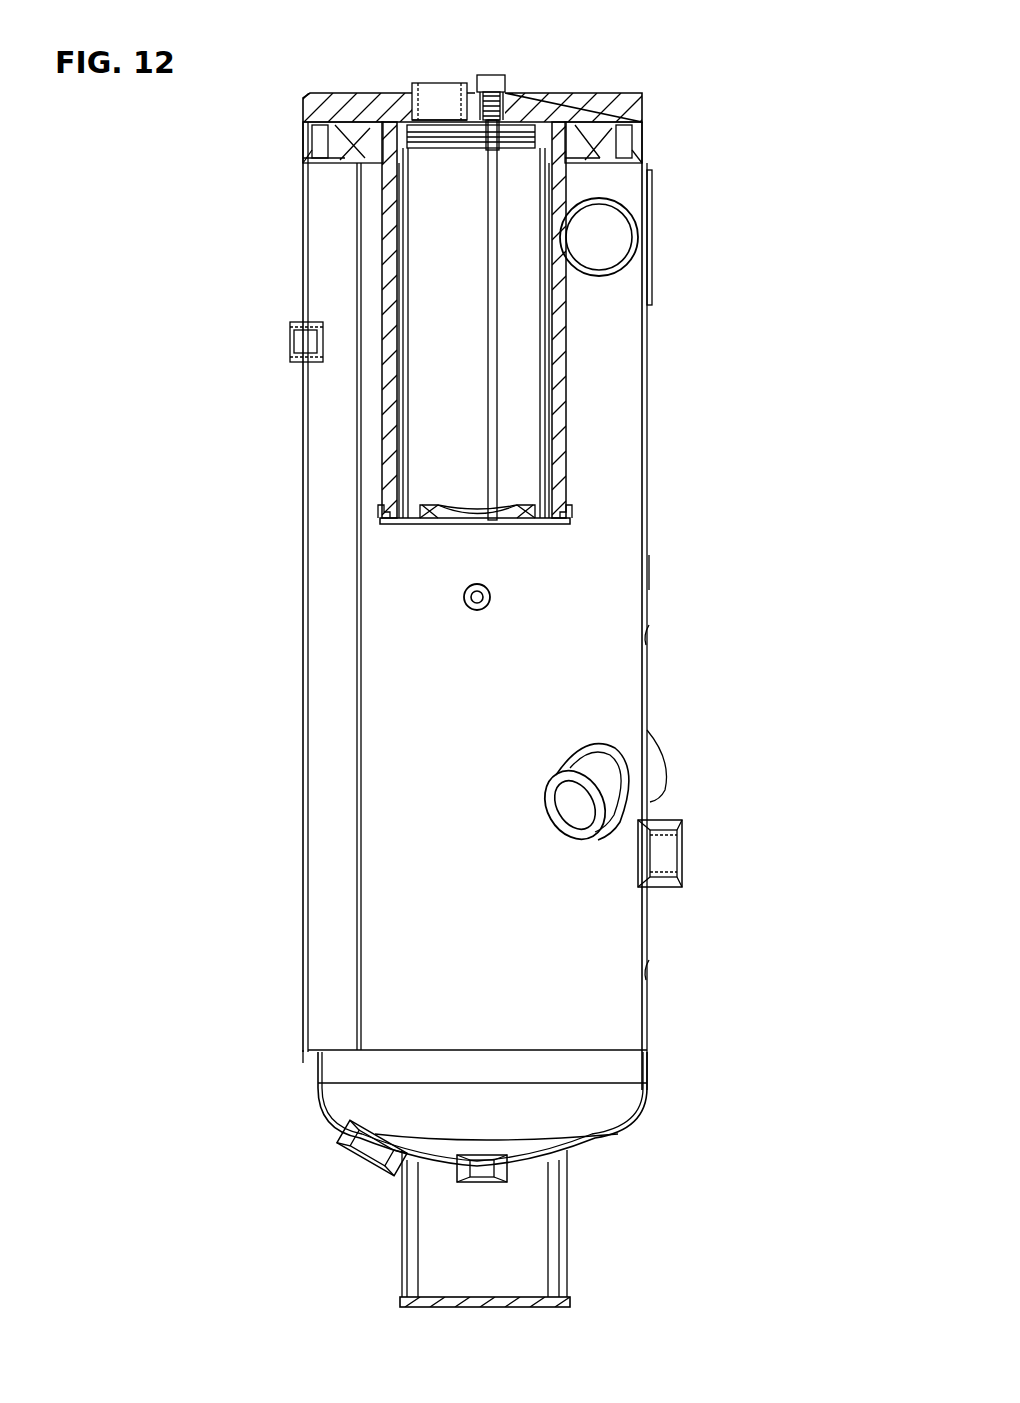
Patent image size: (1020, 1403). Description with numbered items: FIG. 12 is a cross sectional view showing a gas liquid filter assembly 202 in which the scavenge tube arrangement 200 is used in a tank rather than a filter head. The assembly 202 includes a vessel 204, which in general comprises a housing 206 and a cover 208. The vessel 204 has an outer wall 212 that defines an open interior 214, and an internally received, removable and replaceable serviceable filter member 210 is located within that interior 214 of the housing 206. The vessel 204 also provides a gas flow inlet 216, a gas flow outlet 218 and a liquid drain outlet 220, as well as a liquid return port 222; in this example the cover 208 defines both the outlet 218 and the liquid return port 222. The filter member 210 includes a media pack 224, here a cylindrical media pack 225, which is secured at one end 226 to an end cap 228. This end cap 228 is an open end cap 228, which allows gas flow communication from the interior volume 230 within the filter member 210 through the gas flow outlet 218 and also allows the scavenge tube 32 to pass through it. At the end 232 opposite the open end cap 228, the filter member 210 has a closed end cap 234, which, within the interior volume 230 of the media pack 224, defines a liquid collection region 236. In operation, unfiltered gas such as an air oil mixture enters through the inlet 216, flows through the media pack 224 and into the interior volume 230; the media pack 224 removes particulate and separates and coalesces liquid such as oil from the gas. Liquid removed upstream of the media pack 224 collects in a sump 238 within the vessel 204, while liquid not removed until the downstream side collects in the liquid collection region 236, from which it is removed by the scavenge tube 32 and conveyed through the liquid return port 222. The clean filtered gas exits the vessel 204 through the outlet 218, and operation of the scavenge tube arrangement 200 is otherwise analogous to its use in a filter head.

The gas liquid filter assembly 202 is at (763, 47).
The vessel 204 is at (305, 560).
The housing 206 is at (650, 492).
The cover 208 is at (340, 90).
The filter member 210 is at (570, 352).
The outer wall 212 is at (650, 572).
The open interior 214 is at (647, 642).
The gas flow inlet 216 is at (626, 236).
The gas flow outlet 218 is at (422, 85).
The liquid drain outlet 220 is at (495, 1182).
The liquid return port 222 is at (506, 102).
The media pack 224 is at (567, 442).
The cylindrical media pack 225 is at (568, 397).
The end 226 is at (582, 102).
The open end cap 228 is at (372, 148).
The interior volume 230 is at (472, 338).
The end 232 is at (380, 528).
The closed end cap 234 is at (556, 528).
The liquid collection region 236 is at (446, 512).
The sump 238 is at (648, 977).
The scavenge tube 32 is at (488, 213).
The scavenge tube arrangement 200 is at (518, 76).